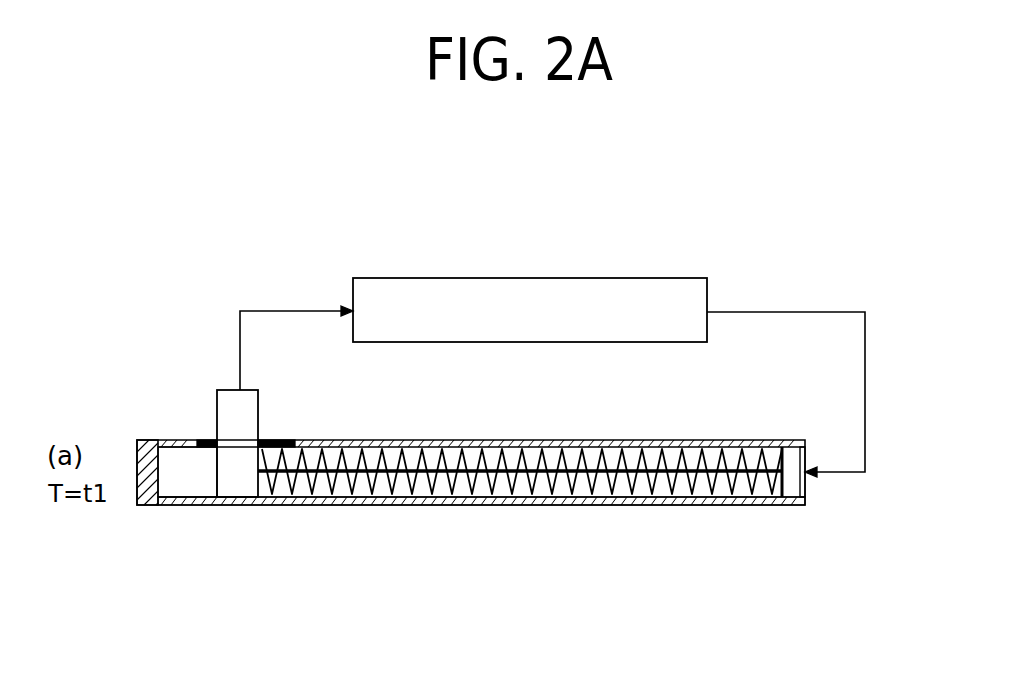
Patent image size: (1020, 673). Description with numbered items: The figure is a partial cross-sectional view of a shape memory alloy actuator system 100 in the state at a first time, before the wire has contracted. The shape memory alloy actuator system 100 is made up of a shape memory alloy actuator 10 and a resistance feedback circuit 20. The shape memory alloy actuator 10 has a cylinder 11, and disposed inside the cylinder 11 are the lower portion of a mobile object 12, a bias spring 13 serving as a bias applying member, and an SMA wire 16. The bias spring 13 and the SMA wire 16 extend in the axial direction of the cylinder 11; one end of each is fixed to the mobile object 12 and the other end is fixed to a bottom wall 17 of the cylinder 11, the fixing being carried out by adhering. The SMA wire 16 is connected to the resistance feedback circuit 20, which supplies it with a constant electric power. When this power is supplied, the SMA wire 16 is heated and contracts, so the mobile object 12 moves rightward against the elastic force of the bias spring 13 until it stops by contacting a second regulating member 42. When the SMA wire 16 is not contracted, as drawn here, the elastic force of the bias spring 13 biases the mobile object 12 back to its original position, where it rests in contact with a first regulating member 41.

The shape memory alloy actuator system 100 is at (495, 432).
The shape memory alloy actuator 10 is at (495, 475).
The cylinder 11 is at (160, 440).
The mobile object 12 is at (227, 390).
The bias spring 13 is at (393, 505).
The SMA wire 16 is at (651, 455).
The bottom wall 17 is at (805, 460).
The resistance feedback circuit 20 is at (657, 278).
The first regulating member 41 is at (205, 440).
The second regulating member 42 is at (293, 440).